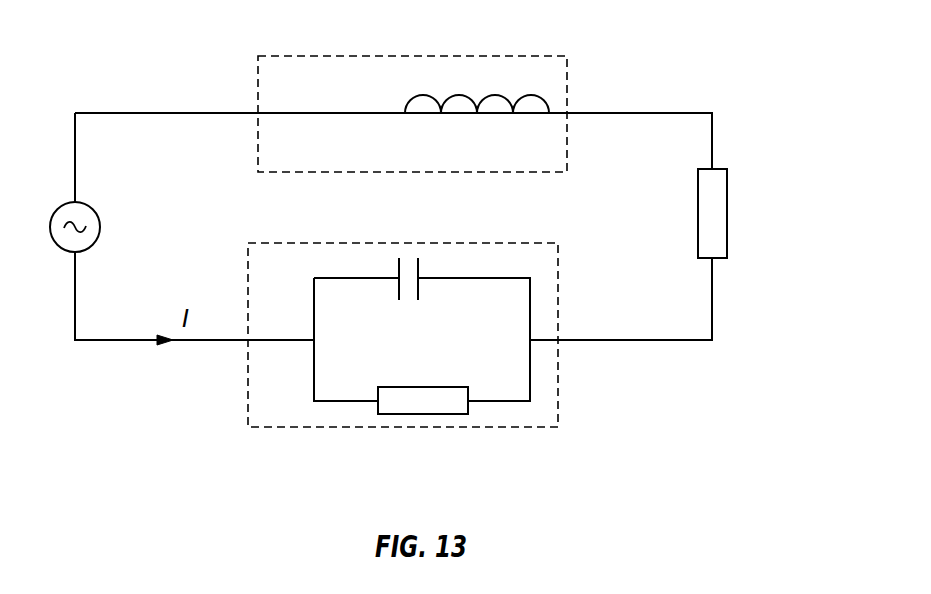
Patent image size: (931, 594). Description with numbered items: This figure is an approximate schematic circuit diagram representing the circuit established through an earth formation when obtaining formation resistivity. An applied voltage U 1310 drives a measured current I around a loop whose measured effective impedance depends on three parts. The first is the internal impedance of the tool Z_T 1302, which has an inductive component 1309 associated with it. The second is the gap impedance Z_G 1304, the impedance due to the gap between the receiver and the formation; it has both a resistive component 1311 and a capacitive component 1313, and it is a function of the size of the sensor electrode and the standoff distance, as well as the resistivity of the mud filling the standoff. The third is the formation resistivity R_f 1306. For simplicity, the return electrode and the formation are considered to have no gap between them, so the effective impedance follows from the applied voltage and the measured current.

The internal impedance of the tool 1302 is at (295, 56).
The inductive component 1309 is at (496, 95).
The formation resistivity 1306 is at (698, 213).
The applied voltage 1310 is at (100, 228).
The capacitive component 1313 is at (398, 272).
The resistive component 1311 is at (387, 416).
The gap impedance 1304 is at (527, 427).